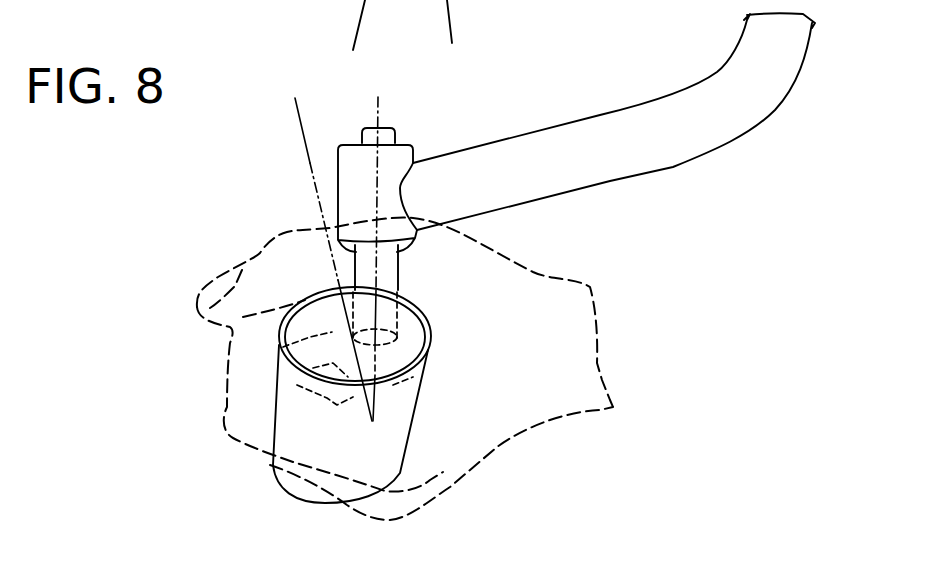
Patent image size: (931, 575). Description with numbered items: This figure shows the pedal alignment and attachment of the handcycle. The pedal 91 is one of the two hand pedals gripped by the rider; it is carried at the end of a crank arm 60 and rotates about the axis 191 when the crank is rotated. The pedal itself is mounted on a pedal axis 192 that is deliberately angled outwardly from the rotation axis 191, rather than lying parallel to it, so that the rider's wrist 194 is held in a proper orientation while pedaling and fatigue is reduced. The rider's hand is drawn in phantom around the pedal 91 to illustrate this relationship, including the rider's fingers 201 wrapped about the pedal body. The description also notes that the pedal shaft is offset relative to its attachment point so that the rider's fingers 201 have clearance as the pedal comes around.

The arm 60 is at (650, 150).
The pedal 91 is at (282, 416).
The axis 191 is at (379, 113).
The pedal axis 192 is at (302, 141).
The rider's wrist 194 is at (497, 447).
The rider's fingers 201 is at (405, 378).